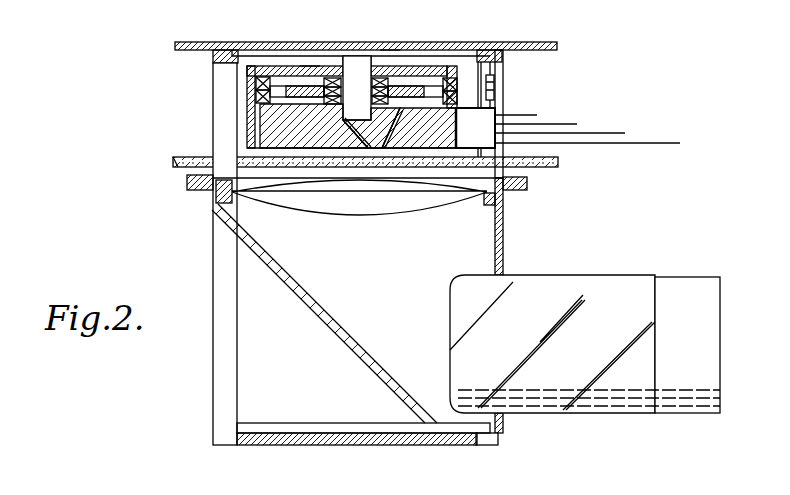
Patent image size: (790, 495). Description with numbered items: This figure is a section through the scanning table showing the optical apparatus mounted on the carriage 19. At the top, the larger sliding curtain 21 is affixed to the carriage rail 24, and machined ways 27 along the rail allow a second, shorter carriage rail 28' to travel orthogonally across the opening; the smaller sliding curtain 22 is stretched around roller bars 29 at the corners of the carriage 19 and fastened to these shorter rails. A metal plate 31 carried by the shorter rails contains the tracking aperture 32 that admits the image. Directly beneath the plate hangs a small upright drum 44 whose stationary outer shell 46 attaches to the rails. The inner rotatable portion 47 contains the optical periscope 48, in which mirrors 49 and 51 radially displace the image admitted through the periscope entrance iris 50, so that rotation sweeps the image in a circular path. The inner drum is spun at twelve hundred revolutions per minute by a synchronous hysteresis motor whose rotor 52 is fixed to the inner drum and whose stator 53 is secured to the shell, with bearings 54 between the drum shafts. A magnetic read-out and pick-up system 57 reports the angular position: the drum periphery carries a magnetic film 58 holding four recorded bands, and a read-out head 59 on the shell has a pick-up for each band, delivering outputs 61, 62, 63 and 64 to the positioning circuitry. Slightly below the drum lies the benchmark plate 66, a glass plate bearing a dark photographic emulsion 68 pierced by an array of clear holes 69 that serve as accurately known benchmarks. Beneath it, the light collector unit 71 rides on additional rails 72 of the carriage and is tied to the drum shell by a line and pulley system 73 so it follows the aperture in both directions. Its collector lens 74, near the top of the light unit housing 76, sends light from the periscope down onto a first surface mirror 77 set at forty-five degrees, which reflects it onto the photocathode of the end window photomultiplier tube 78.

The carriage 19 is at (213, 247).
The larger sliding curtain 21 is at (517, 43).
The smaller sliding curtain 22 is at (373, 446).
The carriage rail 24 is at (504, 60).
The machined ways 27 is at (213, 58).
The second carriage rail 28' is at (475, 42).
The roller bars 29 is at (290, 423).
The metal plate 31 is at (262, 42).
The tracking aperture 32 is at (381, 44).
The drum 44 is at (248, 107).
The outer shell 46 is at (308, 66).
The inner rotatable portion 47 is at (314, 126).
The optical periscope 48 is at (357, 88).
The mirror 49 is at (361, 130).
The periscope entrance iris 50 is at (357, 66).
The mirror 51 is at (374, 147).
The rotor 52 is at (303, 97).
The stator 53 is at (447, 108).
The bearings 54 is at (333, 102).
The magnetic read-out and pick-up system 57 is at (452, 131).
The magnetic film 58 is at (457, 118).
The read-out head 59 is at (470, 128).
The output 61 is at (527, 115).
The output 62 is at (568, 124).
The output 63 is at (615, 133).
The output 64 is at (667, 143).
The benchmark plate 66 is at (542, 167).
The photographic emulsion 68 is at (195, 157).
The holes 69 is at (527, 157).
The light collector unit 71 is at (333, 352).
The rails 72 is at (187, 183).
The line and pulley system 73 is at (495, 88).
The collector lens 74 is at (338, 217).
The light unit housing 76 is at (500, 240).
The first surface mirror 77 is at (331, 322).
The photomultiplier tube 78 is at (588, 277).